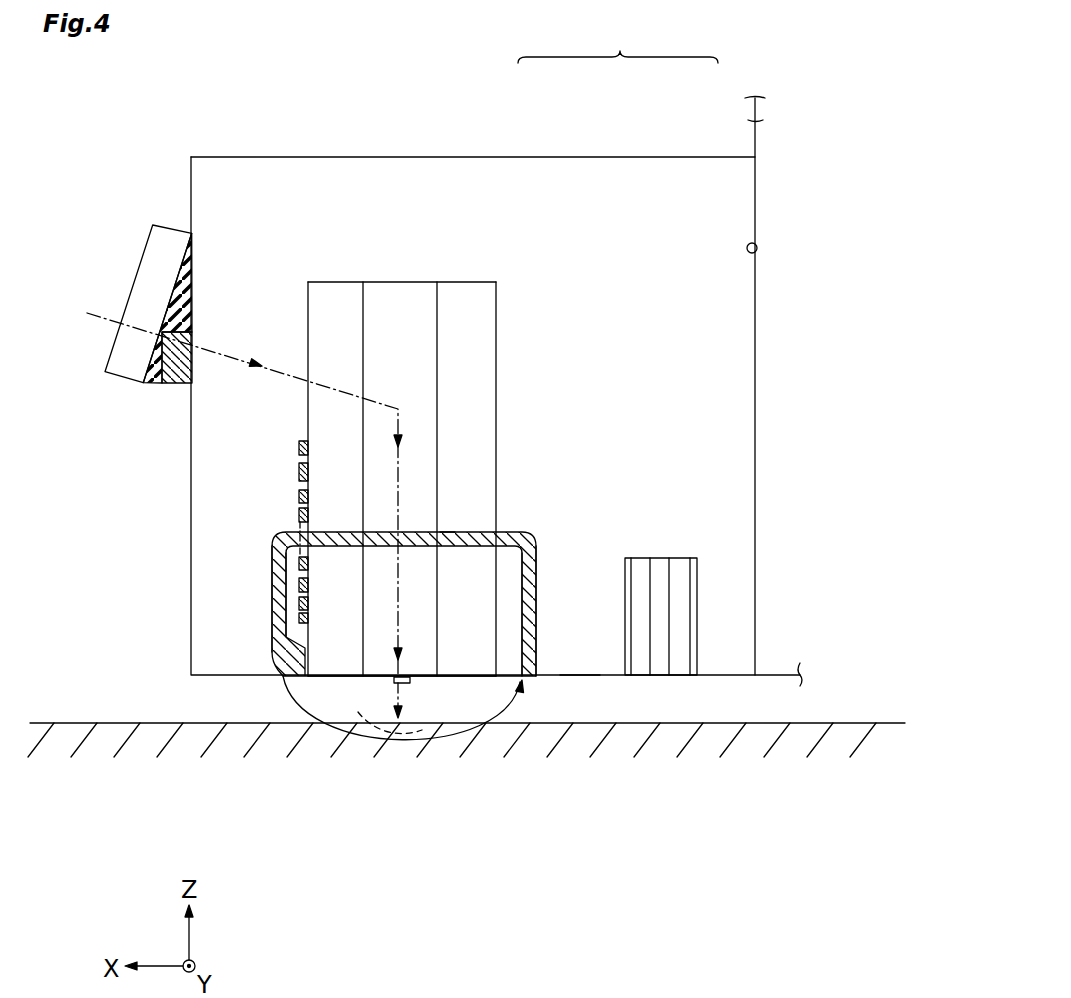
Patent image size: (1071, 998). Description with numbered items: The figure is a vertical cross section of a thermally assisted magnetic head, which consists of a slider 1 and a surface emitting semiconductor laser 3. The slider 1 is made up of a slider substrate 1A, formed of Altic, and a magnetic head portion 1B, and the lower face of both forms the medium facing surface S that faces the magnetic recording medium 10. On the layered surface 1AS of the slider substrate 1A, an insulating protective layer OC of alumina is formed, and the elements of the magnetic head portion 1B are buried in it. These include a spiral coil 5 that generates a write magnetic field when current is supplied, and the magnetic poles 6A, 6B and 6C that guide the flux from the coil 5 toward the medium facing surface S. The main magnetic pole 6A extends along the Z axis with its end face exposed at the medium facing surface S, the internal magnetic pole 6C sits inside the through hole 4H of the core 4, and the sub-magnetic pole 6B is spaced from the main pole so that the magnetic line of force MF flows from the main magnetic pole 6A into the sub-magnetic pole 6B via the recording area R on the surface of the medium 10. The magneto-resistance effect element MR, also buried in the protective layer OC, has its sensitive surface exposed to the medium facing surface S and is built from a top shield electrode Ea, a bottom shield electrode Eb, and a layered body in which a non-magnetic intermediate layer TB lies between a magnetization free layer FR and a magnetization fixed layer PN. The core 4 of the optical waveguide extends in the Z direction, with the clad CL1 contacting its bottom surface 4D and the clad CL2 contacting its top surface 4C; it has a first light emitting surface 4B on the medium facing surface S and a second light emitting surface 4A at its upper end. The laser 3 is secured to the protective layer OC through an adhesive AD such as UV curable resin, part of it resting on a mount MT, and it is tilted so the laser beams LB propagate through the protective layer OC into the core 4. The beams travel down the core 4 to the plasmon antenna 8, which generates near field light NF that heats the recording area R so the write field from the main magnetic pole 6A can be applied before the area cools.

The slider 1 is at (618, 42).
The slider substrate 1A is at (752, 118).
The magnetic head portion 1B is at (515, 137).
The layered surface 1AS is at (757, 248).
The protective layer OC is at (430, 172).
The surface emitting semiconductor laser 3 is at (152, 262).
The adhesive AD is at (160, 372).
The mount MT is at (180, 383).
The laser beams LB is at (245, 366).
The core 4 is at (466, 256).
The second light emitting surface 4A is at (396, 282).
The first light emitting surface 4B is at (431, 677).
The top surface 4C is at (362, 328).
The bottom surface 4D is at (438, 395).
The through hole 4H is at (447, 534).
The clad CL1 is at (486, 318).
The clad CL2 is at (322, 318).
The coil 5 is at (298, 447).
The main magnetic pole 6A is at (283, 662).
The sub-magnetic pole 6B is at (531, 673).
The internal magnetic pole 6C is at (480, 532).
The plasmon antenna 8 is at (393, 680).
The near field light NF is at (408, 700).
The recording area R is at (380, 724).
The magnetic line of force MF is at (363, 740).
The medium facing surface S is at (583, 684).
The magneto-resistance effect element MR is at (709, 556).
The top shield electrode Ea is at (630, 592).
The bottom shield electrode Eb is at (692, 590).
The magnetization free layer FR is at (640, 565).
The non-magnetic intermediate layer TB is at (660, 565).
The magnetization fixed layer PN is at (678, 565).
The magnetic recording medium 10 is at (813, 721).